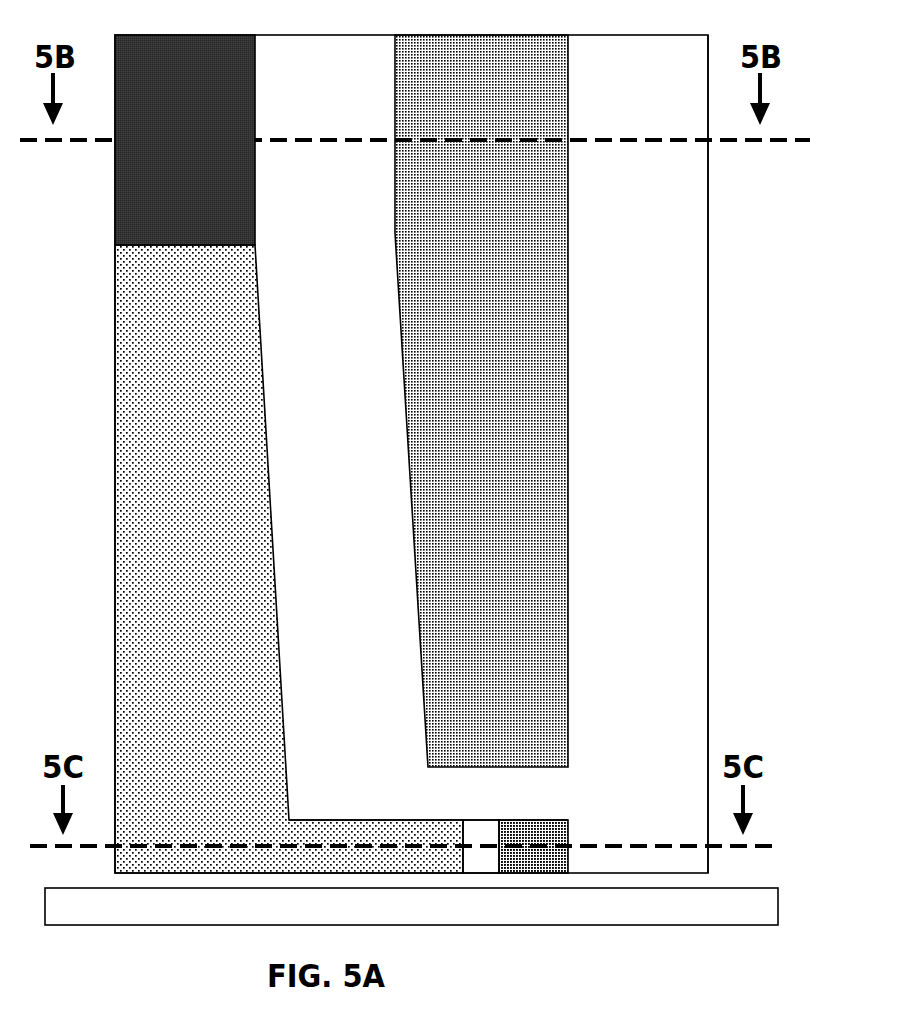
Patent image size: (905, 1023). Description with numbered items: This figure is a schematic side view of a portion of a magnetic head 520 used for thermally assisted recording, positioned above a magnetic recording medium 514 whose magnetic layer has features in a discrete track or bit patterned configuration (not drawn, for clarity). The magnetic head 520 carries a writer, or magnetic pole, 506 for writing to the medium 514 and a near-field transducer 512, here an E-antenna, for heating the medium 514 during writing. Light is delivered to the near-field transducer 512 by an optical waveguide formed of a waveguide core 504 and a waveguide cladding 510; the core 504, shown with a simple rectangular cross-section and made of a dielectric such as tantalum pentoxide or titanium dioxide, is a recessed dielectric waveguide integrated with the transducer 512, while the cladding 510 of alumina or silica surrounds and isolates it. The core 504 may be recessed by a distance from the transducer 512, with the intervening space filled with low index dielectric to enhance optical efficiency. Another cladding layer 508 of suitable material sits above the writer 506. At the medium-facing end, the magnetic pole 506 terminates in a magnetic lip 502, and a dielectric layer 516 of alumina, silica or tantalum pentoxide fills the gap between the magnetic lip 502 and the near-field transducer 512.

The magnetic lip 502 is at (414, 808).
The waveguide core 504 is at (510, 449).
The writer (magnetic pole) 506 is at (211, 486).
The cladding layer 508 is at (204, 204).
The waveguide cladding 510 is at (657, 377).
The near-field transducer 512 is at (549, 828).
The magnetic recording medium 514 is at (435, 918).
The dielectric layer 516 is at (481, 862).
The magnetic head 520 is at (786, 468).